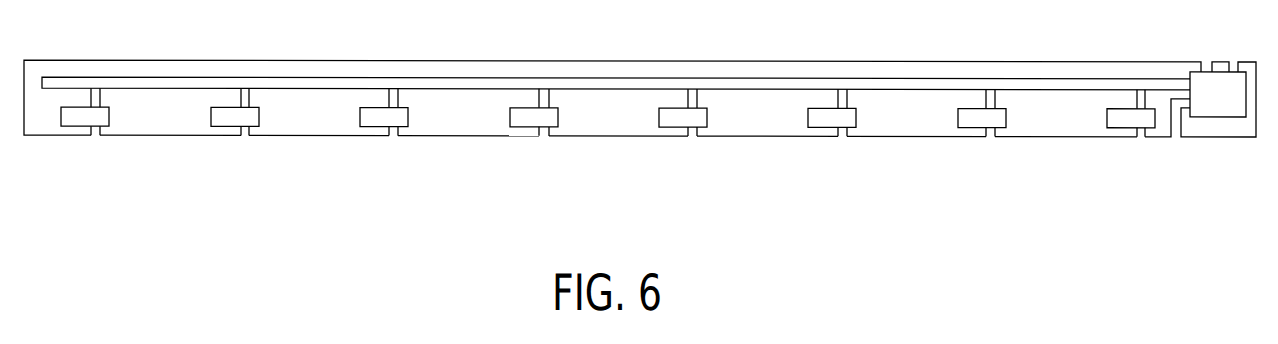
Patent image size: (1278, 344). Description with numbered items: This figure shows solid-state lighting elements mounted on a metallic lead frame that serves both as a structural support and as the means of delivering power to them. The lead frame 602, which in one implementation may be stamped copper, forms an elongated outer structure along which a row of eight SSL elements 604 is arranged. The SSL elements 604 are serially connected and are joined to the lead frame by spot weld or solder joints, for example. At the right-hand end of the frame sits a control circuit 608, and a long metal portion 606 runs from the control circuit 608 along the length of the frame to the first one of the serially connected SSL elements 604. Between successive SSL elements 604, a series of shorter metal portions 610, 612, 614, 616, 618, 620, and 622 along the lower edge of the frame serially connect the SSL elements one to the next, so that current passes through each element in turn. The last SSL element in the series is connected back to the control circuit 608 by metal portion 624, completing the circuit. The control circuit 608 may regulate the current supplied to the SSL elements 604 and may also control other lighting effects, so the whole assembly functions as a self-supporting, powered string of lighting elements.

The lead frame 602 is at (585, 60).
The SSL elements 604 is at (72, 127).
The metal portion 606 is at (813, 77).
The control circuit 608 is at (1199, 103).
The metal portion 610 is at (157, 124).
The metal portion 612 is at (300, 124).
The metal portion 614 is at (455, 124).
The metal portion 616 is at (603, 124).
The metal portion 618 is at (743, 124).
The metal portion 620 is at (892, 124).
The metal portion 622 is at (1046, 124).
The metal portion 624 is at (1165, 122).